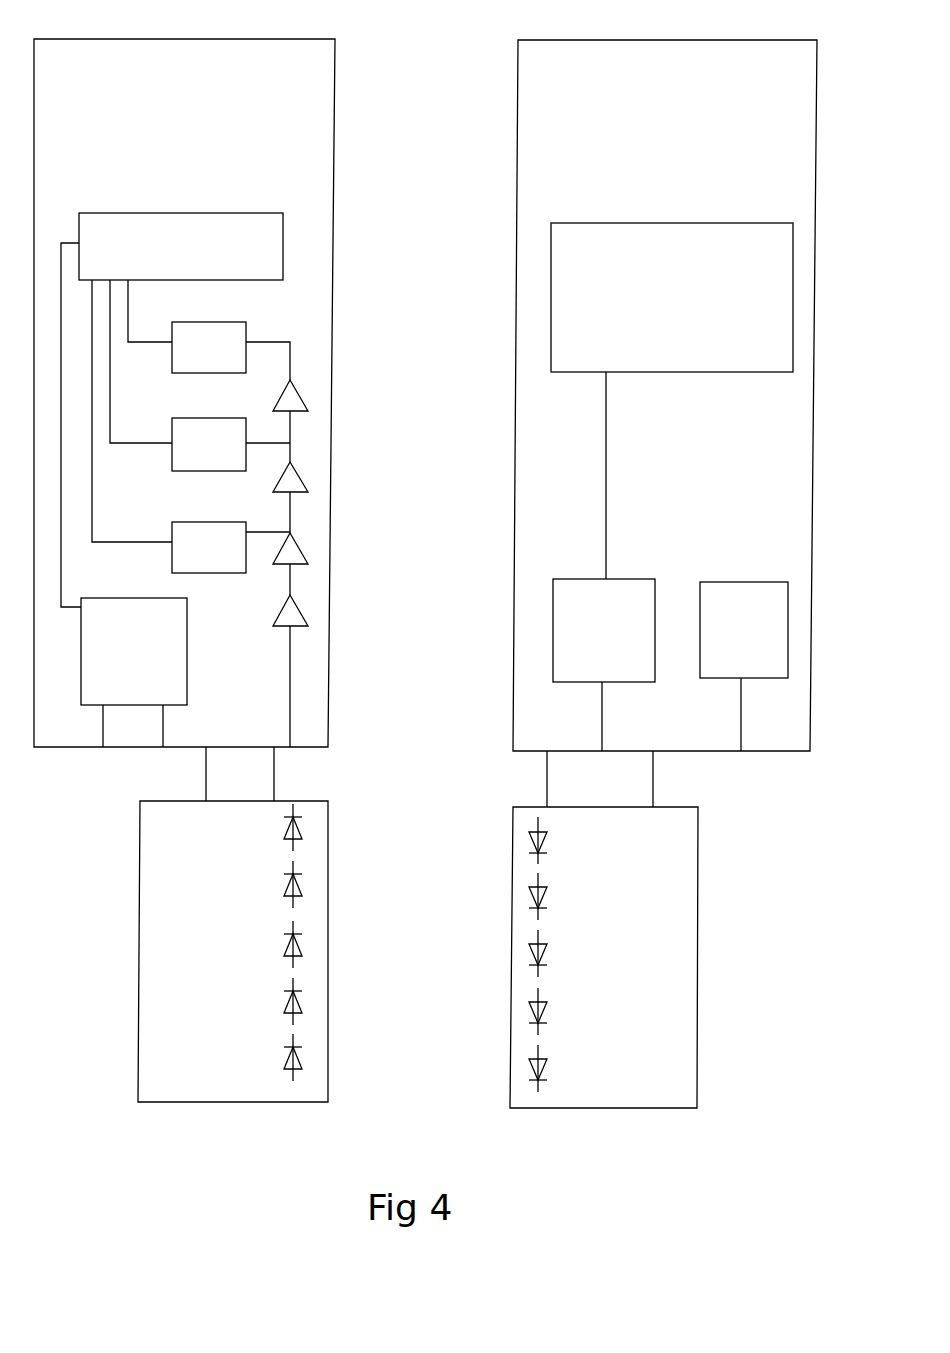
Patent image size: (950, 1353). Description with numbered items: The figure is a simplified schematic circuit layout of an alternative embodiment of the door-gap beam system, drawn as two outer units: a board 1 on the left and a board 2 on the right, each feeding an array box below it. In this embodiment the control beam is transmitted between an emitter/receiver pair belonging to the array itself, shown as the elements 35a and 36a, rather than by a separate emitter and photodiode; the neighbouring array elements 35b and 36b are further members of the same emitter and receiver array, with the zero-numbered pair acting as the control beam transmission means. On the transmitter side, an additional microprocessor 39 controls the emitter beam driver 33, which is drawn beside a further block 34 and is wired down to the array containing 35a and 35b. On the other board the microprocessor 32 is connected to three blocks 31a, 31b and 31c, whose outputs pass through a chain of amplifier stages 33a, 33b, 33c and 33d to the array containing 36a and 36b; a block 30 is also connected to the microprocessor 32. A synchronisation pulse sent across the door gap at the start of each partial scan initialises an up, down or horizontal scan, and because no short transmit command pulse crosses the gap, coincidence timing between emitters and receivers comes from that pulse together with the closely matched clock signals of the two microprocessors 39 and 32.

The transmitter unit 1 is at (200, 384).
The receiver unit 2 is at (686, 391).
The power supply 30 is at (134, 651).
The first signal generator 31a is at (209, 347).
The second signal generator 31b is at (209, 444).
The third signal generator 31c is at (209, 547).
The microprocessor on the receiver board 32 is at (181, 246).
The emitter beam driver 33 is at (604, 630).
The first amplifier 33a is at (331, 389).
The second amplifier 33b is at (333, 470).
The third amplifier 33c is at (332, 547).
The fourth amplifier 33d is at (334, 615).
The power supply of receiver 34 is at (744, 630).
The emitter of the array 35a is at (574, 840).
The second photodiode 35b is at (574, 896).
The receiver of the array 36a is at (265, 827).
The second light emitting diode 36b is at (265, 885).
The microprocessor on the transmitter board 39 is at (672, 297).